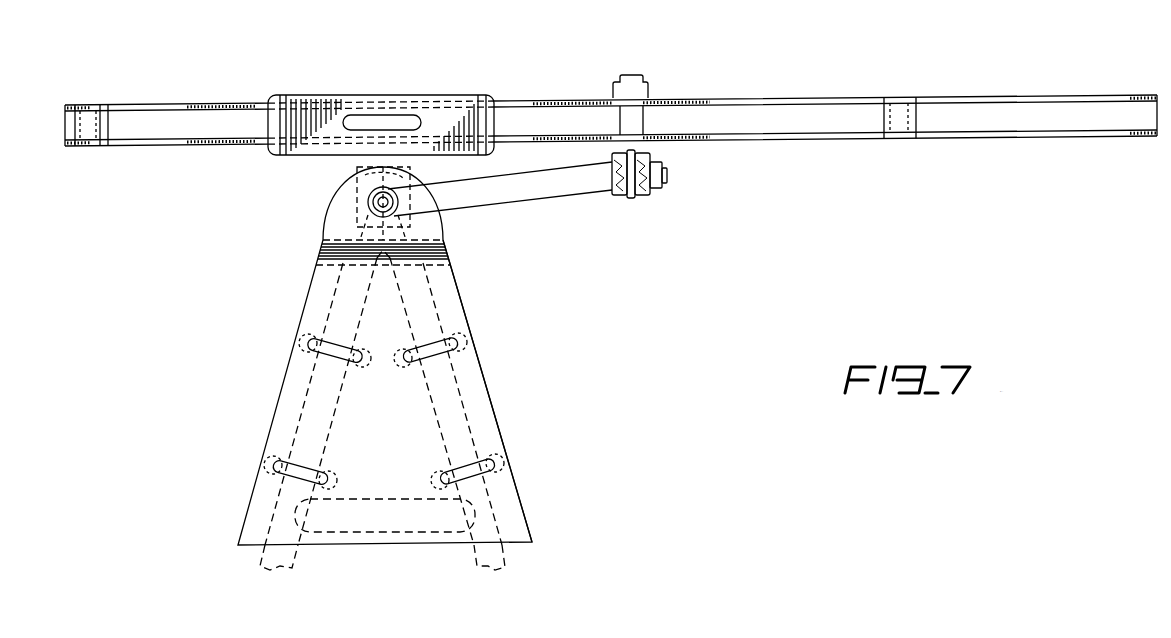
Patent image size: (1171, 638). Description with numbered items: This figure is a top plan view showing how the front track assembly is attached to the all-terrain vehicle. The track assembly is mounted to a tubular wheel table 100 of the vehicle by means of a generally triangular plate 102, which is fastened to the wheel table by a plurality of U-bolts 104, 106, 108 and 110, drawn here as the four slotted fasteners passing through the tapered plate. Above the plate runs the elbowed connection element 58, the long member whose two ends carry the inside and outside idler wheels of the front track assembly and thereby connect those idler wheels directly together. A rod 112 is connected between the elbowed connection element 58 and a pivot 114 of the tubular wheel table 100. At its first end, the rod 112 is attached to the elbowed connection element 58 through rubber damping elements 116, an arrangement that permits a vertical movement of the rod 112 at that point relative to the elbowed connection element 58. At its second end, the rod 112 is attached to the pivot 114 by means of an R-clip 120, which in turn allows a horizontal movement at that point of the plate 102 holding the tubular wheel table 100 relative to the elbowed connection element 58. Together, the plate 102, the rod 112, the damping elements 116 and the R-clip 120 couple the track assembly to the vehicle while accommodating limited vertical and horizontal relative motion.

The elbowed connection element 58 is at (851, 101).
The tubular wheel table 100 is at (498, 570).
The generally triangular plate 102 is at (522, 492).
The U-bolt 104 is at (497, 458).
The U-bolt 106 is at (463, 336).
The U-bolt 108 is at (270, 458).
The U-bolt 110 is at (306, 338).
The rod 112 is at (517, 203).
The pivot 114 is at (374, 210).
The rubber damping elements 116 is at (647, 198).
The R-clip 120 is at (384, 187).